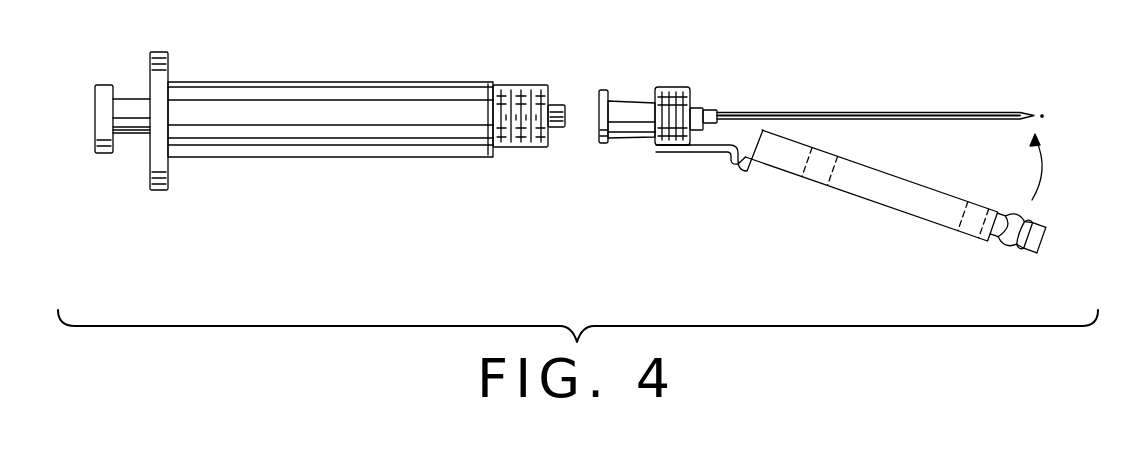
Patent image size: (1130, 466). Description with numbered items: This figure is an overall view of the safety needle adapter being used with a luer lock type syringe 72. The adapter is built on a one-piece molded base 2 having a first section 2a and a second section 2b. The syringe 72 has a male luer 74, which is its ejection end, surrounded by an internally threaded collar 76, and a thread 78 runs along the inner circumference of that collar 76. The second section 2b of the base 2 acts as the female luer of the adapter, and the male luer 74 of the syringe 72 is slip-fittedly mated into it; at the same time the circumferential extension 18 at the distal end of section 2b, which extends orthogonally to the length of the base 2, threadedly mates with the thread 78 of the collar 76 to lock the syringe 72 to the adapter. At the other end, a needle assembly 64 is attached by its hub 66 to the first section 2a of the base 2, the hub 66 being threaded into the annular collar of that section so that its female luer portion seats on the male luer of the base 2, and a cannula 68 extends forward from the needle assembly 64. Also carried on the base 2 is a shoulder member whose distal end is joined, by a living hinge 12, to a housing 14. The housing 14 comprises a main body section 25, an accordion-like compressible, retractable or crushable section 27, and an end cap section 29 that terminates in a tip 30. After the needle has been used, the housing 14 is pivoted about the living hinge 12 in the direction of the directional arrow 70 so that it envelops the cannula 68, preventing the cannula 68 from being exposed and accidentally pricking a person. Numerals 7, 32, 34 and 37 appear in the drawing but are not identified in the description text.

The base 2 is at (803, 132).
The first section 2a is at (673, 87).
The second section 2b is at (630, 101).
The hub base 7 is at (667, 142).
The living hinge 12 is at (733, 170).
The housing 14 is at (932, 224).
The circumferential extension 18 is at (600, 145).
The main body section 25 is at (867, 200).
The compressible section 27 is at (1048, 265).
The end cap section 29 is at (1042, 226).
The tip 30 is at (1040, 250).
The tube inner end 32 is at (973, 242).
The score lines 34 is at (815, 178).
The stopper end cap 37 is at (1030, 258).
The needle assembly 64 is at (880, 62).
The hub 66 is at (698, 104).
The cannula 68 is at (905, 110).
The directional arrow 70 is at (1045, 168).
The luer lock type syringe 72 is at (362, 158).
The male luer 74 is at (561, 104).
The internally threaded collar 76 is at (507, 116).
The thread 78 is at (513, 92).